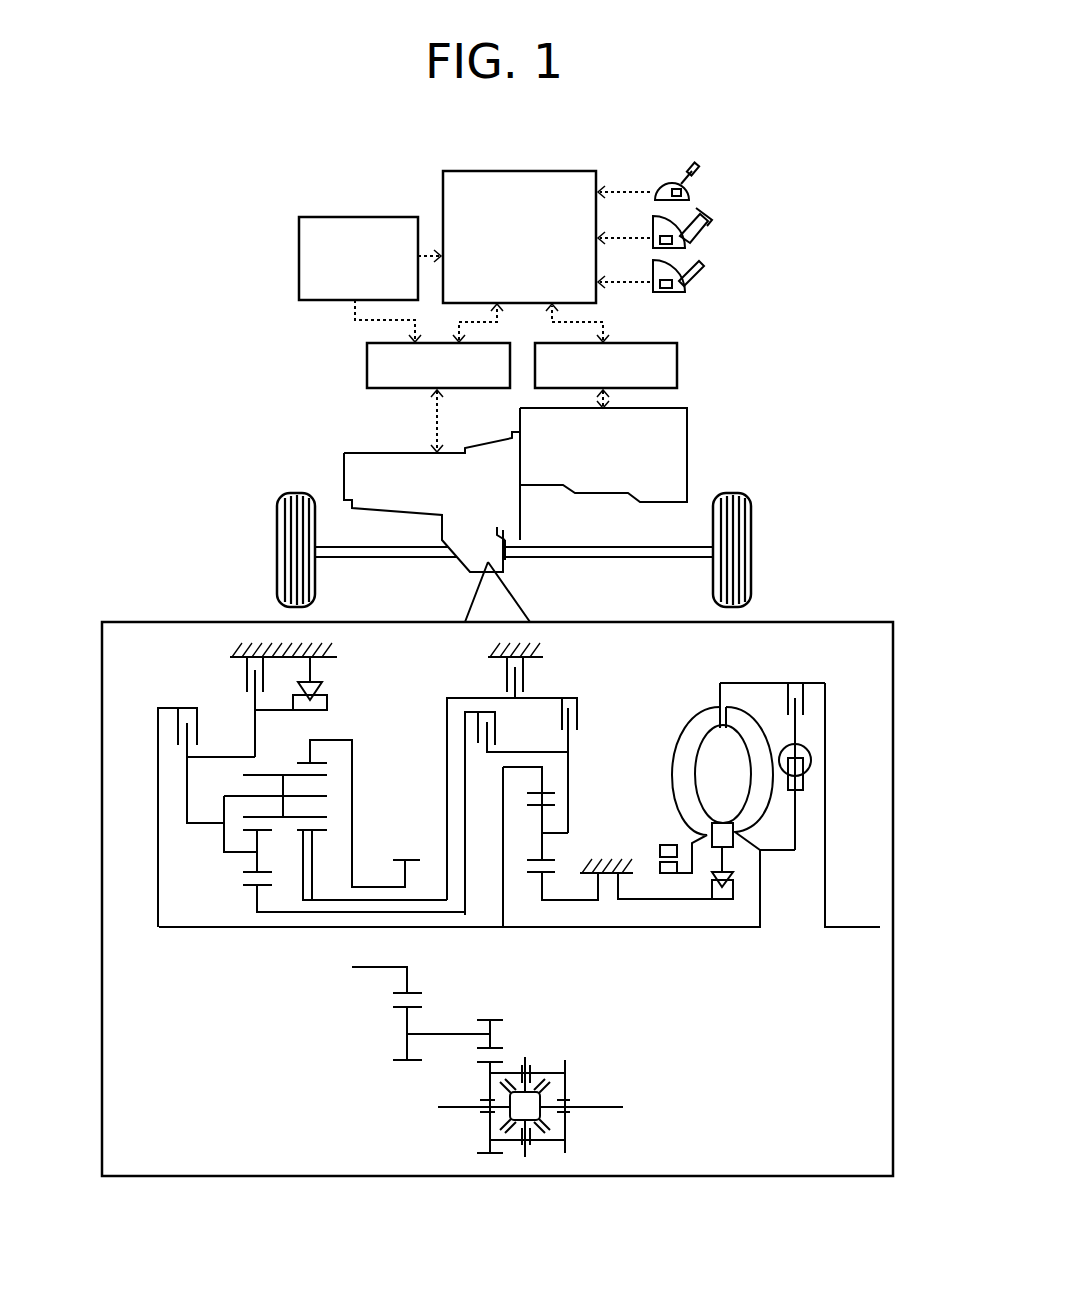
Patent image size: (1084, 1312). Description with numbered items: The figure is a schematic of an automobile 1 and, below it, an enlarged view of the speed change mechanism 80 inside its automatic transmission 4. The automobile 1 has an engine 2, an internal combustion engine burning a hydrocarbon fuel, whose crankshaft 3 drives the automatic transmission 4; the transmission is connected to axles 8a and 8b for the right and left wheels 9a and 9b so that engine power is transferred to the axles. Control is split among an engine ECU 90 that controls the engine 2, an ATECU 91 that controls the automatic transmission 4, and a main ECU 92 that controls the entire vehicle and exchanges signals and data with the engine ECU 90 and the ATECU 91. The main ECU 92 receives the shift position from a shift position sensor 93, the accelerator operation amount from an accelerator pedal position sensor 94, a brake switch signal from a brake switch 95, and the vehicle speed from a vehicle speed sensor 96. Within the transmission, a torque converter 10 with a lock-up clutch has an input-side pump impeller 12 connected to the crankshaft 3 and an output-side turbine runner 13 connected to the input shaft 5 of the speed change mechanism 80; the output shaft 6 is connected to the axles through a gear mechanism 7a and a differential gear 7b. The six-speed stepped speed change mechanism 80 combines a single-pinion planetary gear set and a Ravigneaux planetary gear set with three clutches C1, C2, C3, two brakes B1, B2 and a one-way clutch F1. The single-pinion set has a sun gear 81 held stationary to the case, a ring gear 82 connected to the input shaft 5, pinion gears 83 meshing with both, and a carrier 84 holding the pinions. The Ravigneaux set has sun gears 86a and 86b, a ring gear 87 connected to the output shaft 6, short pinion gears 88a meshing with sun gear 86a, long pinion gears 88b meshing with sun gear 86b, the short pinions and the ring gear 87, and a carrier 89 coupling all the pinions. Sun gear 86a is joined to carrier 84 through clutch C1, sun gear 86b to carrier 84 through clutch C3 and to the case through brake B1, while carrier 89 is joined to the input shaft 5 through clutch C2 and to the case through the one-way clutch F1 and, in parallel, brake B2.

The automobile 1 is at (190, 186).
The engine 2 is at (688, 452).
The crankshaft 3 is at (840, 930).
The automatic transmission 4 is at (343, 478).
The input shaft 5 is at (720, 930).
The output shaft 6 is at (382, 886).
The gear mechanism 7a is at (512, 1028).
The differential gear 7b is at (572, 1066).
The axle 8a is at (562, 546).
The axle 8b is at (352, 546).
The wheel 9a is at (751, 548).
The wheel 9b is at (277, 548).
The torque converter 10 is at (714, 759).
The pump impeller 12 is at (672, 748).
The turbine runner 13 is at (752, 726).
The speed change mechanism 80 is at (308, 982).
The sun gear 81 is at (540, 876).
The ring gear 82 is at (548, 792).
The pinion gears 83 is at (553, 858).
The carrier 84 is at (559, 832).
The sun gear 86a is at (250, 888).
The sun gear 86b is at (305, 836).
The ring gear 87 is at (321, 762).
The short pinion gears 88a is at (257, 858).
The long pinion gears 88b is at (265, 775).
The carrier 89 is at (200, 822).
The engine electronic control unit 90 is at (679, 362).
The automatic transmission electronic control unit 91 is at (366, 366).
The main electronic control unit 92 is at (442, 203).
The shift position sensor 93 is at (695, 180).
The accelerator pedal position sensor 94 is at (703, 233).
The brake switch 95 is at (700, 277).
The vehicle speed sensor 96 is at (297, 255).
The brake B1 is at (523, 666).
The brake B2 is at (246, 668).
The clutch C1 is at (476, 727).
The clutch C2 is at (176, 718).
The clutch C3 is at (580, 711).
The one-way clutch F1 is at (322, 680).